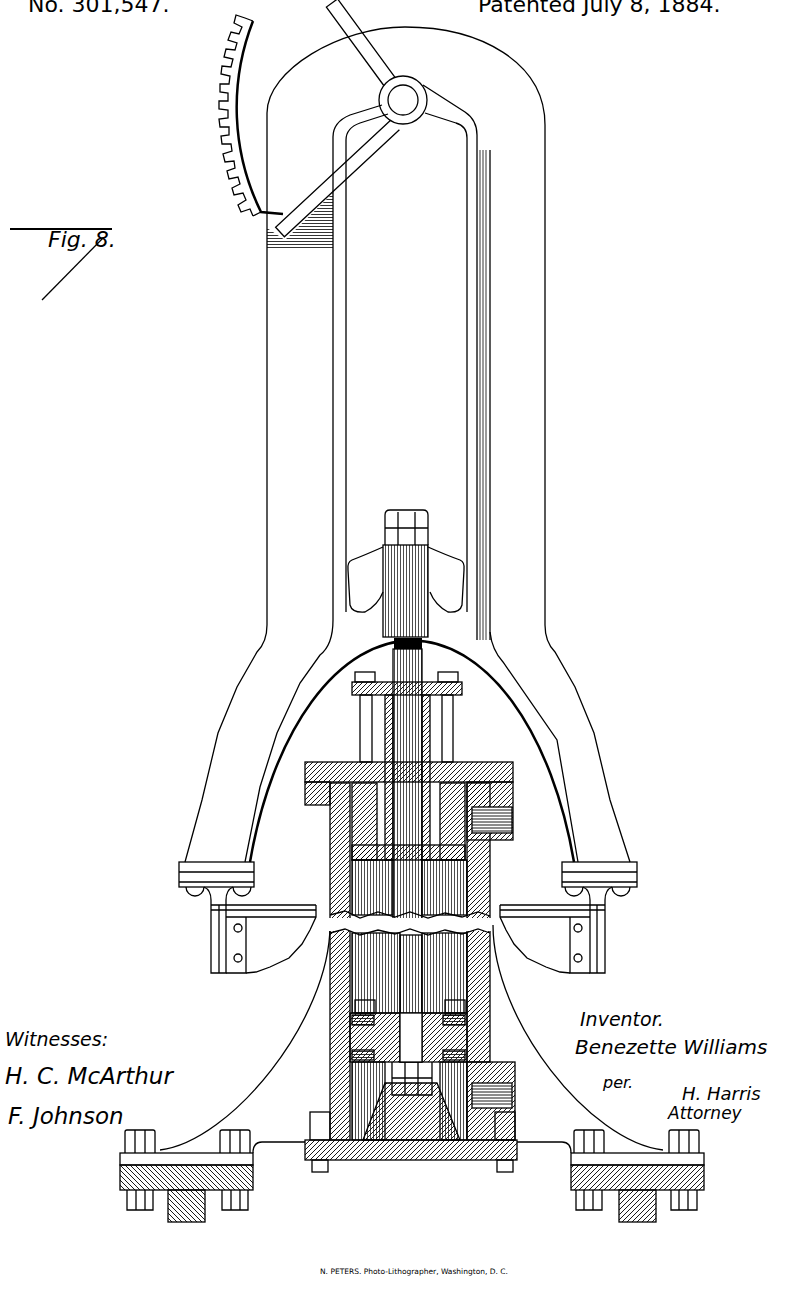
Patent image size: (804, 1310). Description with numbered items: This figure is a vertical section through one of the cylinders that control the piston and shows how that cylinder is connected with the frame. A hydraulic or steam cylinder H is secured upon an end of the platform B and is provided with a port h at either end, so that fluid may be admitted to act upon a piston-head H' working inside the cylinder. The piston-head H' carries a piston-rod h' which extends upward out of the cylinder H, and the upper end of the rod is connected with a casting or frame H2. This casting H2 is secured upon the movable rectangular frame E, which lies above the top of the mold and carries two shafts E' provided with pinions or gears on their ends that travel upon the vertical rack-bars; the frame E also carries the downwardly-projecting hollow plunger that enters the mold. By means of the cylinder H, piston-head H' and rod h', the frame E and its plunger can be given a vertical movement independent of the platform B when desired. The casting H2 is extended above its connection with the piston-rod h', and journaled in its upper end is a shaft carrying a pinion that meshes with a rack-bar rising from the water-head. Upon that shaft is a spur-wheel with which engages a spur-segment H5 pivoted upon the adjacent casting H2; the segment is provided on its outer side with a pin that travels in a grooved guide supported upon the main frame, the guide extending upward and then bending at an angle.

The casting or frame H2 is at (298, 452).
The spur-segment H5 is at (283, 172).
The piston-rod h' is at (406, 714).
The hydraulic or steam cylinder H is at (403, 967).
The port h is at (501, 957).
The piston-head H' is at (441, 1037).
The rectangular frame E is at (245, 917).
The shaft E' is at (568, 917).
The platform B is at (254, 1195).